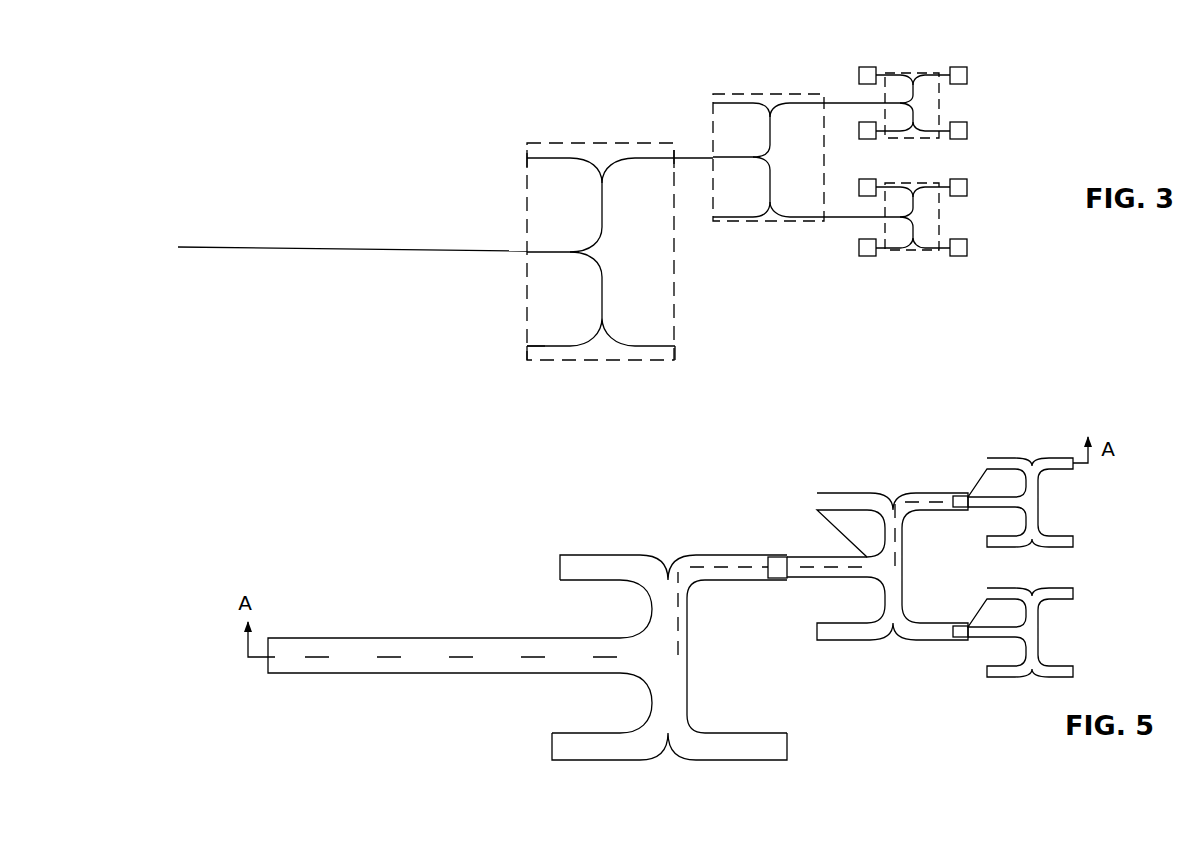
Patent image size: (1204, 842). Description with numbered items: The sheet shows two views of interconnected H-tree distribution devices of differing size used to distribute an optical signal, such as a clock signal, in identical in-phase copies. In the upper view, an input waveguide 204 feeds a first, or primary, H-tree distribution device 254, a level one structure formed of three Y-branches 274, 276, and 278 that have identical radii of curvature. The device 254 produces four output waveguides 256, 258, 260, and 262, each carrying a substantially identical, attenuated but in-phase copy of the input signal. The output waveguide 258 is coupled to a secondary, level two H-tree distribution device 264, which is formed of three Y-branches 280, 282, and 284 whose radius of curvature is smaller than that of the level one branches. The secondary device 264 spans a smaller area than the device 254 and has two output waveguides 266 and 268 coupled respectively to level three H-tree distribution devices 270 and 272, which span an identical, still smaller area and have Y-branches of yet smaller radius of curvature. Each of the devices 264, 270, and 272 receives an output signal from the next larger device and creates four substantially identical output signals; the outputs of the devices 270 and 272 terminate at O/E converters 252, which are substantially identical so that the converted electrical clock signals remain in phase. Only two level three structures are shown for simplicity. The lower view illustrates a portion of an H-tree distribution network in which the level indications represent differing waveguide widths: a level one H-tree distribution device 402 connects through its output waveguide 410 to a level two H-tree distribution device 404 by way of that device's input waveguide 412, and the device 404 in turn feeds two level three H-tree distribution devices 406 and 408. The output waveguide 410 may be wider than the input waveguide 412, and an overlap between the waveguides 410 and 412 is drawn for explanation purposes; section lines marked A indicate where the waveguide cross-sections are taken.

In FIG. 3, the input waveguide 204 is at (242, 250).
In FIG. 3, the O/E converter 252 is at (865, 67).
In FIG. 3, the first H-tree distribution device 254 is at (563, 362).
In FIG. 3, the output waveguide 256 is at (545, 157).
In FIG. 3, the output waveguide 258 is at (650, 157).
In FIG. 3, the output waveguide 260 is at (530, 350).
In FIG. 3, the output waveguide 262 is at (655, 362).
In FIG. 3, the secondary H-tree distribution device 264 is at (760, 92).
In FIG. 3, the output waveguide 266 is at (808, 92).
In FIG. 3, the output waveguide 268 is at (808, 222).
In FIG. 3, the H-tree distribution device 270 is at (907, 73).
In FIG. 3, the H-tree distribution device 272 is at (903, 250).
In FIG. 3, the Y-branch 274 is at (568, 264).
In FIG. 3, the Y-branch 276 is at (619, 181).
In FIG. 3, the Y-branch 278 is at (620, 329).
In FIG. 3, the Y-branch 280 is at (753, 168).
In FIG. 3, the Y-branch 282 is at (782, 118).
In FIG. 3, the Y-branch 284 is at (766, 219).
In FIG. 5, the level 1 H-tree distribution device 402 is at (628, 760).
In FIG. 5, the level 2 H-tree distribution device 404 is at (867, 493).
In FIG. 5, the level 3 H-tree distribution device 406 is at (1055, 458).
In FIG. 5, the level 3 H-tree distribution device 408 is at (1058, 599).
In FIG. 5, the output waveguide 410 is at (740, 580).
In FIG. 5, the input waveguide 412 is at (805, 556).